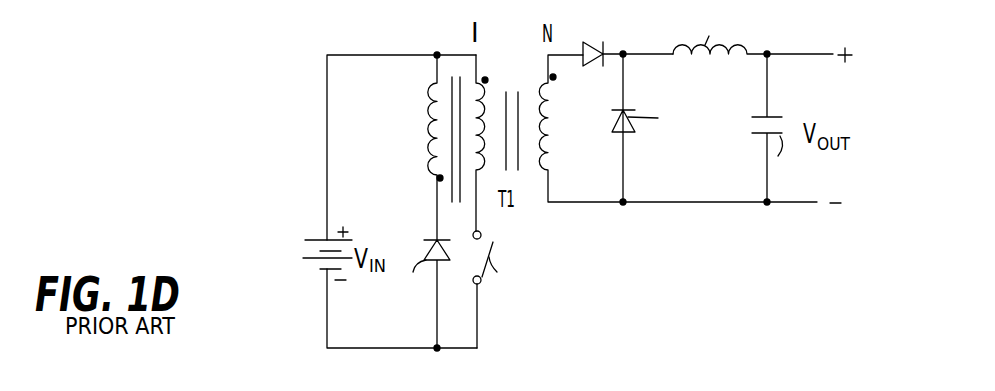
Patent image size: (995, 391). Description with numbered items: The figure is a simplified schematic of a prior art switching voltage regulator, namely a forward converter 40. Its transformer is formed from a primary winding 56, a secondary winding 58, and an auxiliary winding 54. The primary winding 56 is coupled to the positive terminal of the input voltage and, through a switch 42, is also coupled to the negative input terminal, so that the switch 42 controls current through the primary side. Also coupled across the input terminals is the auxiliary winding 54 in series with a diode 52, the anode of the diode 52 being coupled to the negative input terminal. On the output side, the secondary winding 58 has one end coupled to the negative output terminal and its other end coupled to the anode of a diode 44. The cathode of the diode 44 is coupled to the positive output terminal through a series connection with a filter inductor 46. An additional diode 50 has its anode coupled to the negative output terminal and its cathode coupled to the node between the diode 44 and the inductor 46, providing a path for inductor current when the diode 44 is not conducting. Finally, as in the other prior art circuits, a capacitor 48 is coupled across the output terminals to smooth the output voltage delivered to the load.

The forward converter 40 is at (658, 247).
The switch 42 is at (486, 284).
The diode 44 is at (606, 45).
The filter inductor 46 is at (729, 48).
The capacitor 48 is at (785, 130).
The additional diode 50 is at (636, 133).
The diode 52 is at (448, 256).
The auxiliary winding 54 is at (430, 150).
The primary winding 56 is at (486, 92).
The secondary winding 58 is at (550, 130).